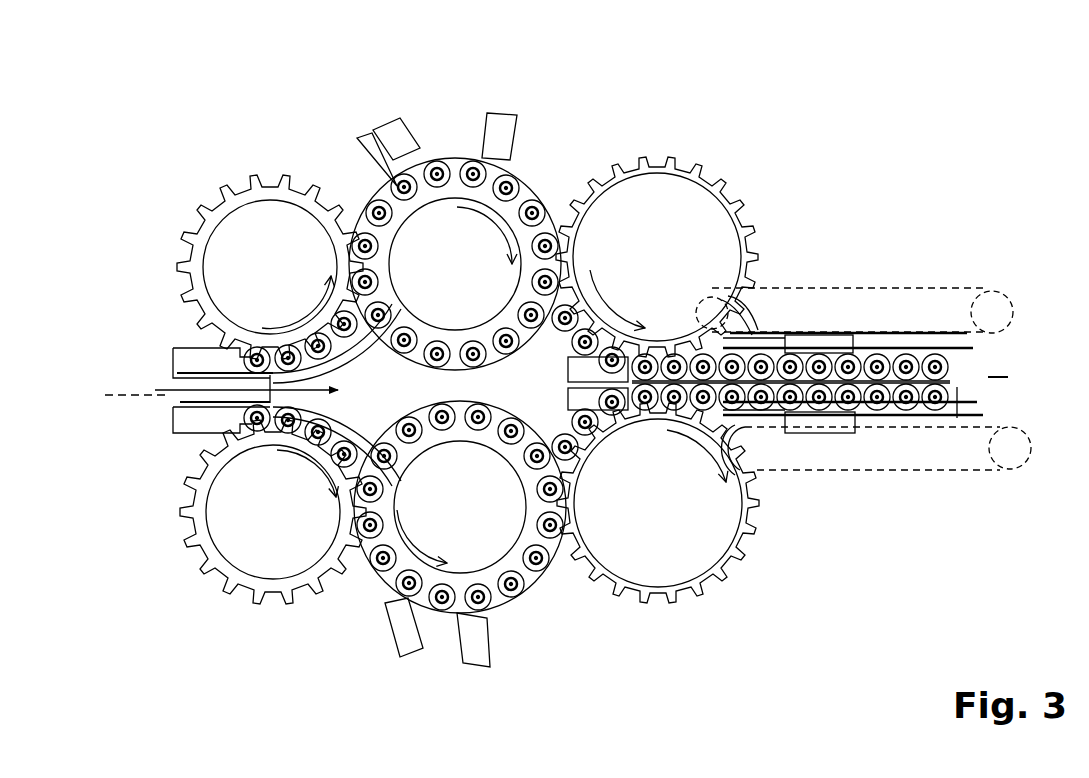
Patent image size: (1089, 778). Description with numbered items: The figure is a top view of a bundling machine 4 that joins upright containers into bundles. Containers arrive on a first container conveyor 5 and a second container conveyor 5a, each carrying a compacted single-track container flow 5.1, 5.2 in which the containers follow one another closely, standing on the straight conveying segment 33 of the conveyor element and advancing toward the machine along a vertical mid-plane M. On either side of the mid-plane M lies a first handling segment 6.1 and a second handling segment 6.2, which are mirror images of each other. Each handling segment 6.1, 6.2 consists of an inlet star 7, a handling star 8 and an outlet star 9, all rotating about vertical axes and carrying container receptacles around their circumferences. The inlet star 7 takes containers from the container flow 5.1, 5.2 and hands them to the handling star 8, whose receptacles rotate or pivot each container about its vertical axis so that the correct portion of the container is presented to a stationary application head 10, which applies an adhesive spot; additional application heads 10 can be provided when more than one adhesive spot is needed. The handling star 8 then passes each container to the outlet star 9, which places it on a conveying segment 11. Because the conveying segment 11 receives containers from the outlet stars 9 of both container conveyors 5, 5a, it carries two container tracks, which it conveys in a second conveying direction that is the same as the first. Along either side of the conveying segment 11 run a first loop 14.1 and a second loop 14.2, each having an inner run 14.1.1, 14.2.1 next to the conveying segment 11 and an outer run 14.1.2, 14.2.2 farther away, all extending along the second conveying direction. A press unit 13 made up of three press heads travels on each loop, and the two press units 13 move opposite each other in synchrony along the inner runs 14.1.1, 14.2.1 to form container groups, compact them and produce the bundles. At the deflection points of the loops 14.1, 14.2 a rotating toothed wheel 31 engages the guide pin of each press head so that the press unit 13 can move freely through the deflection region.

The bundling machine 4 is at (818, 217).
The first container conveyor 5 is at (150, 525).
The second container conveyor 5a is at (170, 195).
The first single-track container flow 5.1 is at (353, 333).
The second single-track container flow 5.2 is at (330, 422).
The first handling segment 6.1 is at (421, 92).
The second handling segment 6.2 is at (578, 603).
The inlet star 7 is at (280, 227).
The handling star 8 is at (492, 223).
The outlet star 9 is at (685, 197).
The application head 10 is at (393, 132).
The conveying segment 11 is at (968, 387).
The press unit 13 is at (843, 333).
The first loop 14.1 is at (913, 270).
The inner run of first loop 14.1.1 is at (757, 335).
The outer run of first loop 14.1.2 is at (922, 287).
The second loop 14.2 is at (953, 492).
The inner run of second loop 14.2.1 is at (912, 430).
The outer run of second loop 14.2.2 is at (855, 475).
The rotating toothed wheel 31 is at (1010, 428).
The straight conveying segment 33 is at (183, 348).
The vertical mid-plane M is at (221, 382).